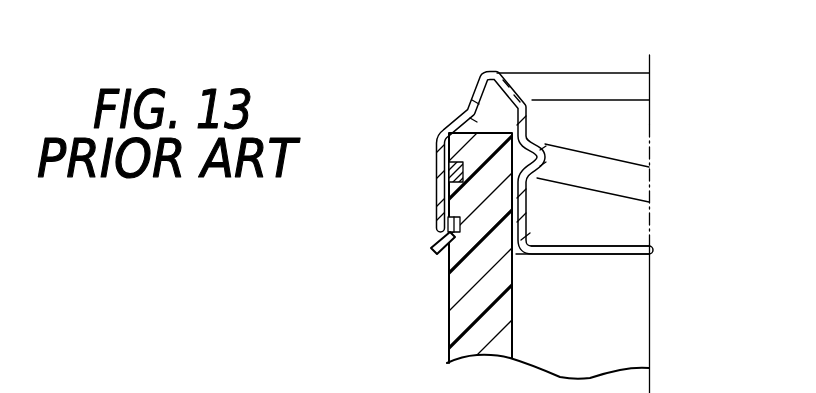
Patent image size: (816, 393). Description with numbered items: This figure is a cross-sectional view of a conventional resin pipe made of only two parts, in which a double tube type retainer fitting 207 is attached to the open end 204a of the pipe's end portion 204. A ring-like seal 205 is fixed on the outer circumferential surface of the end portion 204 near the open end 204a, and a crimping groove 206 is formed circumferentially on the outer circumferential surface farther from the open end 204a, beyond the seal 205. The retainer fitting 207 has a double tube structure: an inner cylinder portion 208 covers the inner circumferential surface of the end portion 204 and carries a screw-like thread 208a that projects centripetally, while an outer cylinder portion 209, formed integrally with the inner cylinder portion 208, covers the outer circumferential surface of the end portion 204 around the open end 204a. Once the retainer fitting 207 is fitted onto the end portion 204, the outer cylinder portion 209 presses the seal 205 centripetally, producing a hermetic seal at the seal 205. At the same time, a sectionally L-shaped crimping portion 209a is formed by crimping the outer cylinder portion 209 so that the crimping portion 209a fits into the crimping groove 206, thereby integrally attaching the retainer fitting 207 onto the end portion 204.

The end portion 204 is at (447, 335).
The open end 204a is at (473, 114).
The ring-like seal 205 is at (440, 177).
The crimping groove 206 is at (450, 253).
The retainer fitting 207 is at (543, 70).
The inner cylinder portion 208 is at (598, 257).
The screw-like thread 208a is at (638, 183).
The outer cylinder portion 209 is at (437, 153).
The crimping portion 209a is at (433, 228).